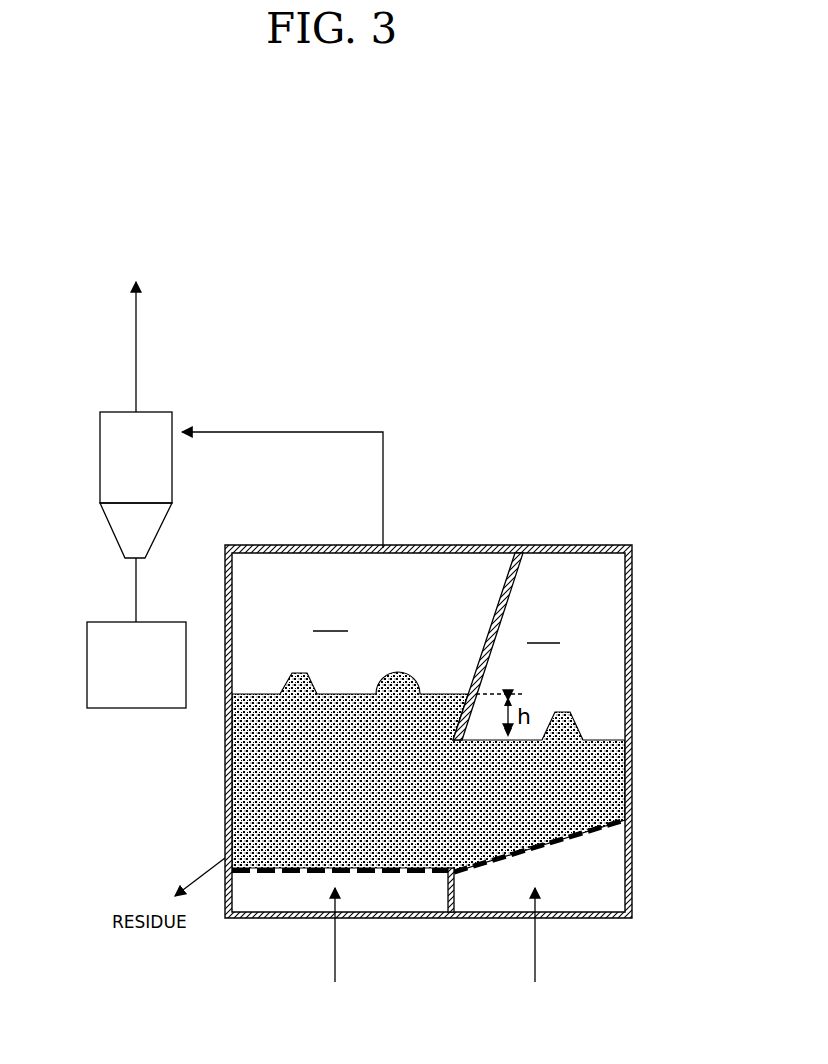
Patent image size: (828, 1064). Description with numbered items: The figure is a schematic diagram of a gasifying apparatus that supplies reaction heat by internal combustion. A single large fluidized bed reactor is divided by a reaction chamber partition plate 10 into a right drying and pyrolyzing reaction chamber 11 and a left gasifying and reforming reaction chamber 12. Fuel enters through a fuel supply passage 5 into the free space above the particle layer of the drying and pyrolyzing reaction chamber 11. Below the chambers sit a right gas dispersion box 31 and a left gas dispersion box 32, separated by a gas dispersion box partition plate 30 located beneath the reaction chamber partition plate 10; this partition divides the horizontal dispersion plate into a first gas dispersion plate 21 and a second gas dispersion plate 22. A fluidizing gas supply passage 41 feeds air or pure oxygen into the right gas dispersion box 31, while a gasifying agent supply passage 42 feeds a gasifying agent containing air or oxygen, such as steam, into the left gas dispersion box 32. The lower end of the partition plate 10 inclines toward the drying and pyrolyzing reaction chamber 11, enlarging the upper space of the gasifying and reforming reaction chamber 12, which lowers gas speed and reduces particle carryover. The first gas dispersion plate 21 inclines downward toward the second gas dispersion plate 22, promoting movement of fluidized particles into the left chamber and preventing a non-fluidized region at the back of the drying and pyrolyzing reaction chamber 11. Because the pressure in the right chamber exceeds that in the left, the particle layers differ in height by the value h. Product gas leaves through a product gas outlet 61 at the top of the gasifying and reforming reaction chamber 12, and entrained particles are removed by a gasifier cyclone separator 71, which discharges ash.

The fuel supply passage 5 is at (638, 660).
The reaction chamber partition plate 10 is at (493, 627).
The drying and pyrolyzing reaction chamber 11 is at (570, 583).
The gasifying and reforming reaction chamber 12 is at (388, 628).
The first gas dispersion plate 21 is at (563, 820).
The second gas dispersion plate 22 is at (295, 874).
The gas dispersion box partition plate 30 is at (453, 890).
The right gas dispersion box 31 is at (590, 873).
The left gas dispersion box 32 is at (258, 900).
The fluidizing gas supply passage 41 is at (538, 952).
The gasifying agent supply passage 42 is at (338, 952).
The product gas outlet 61 is at (383, 485).
The gasifier cyclone separator 71 is at (118, 455).